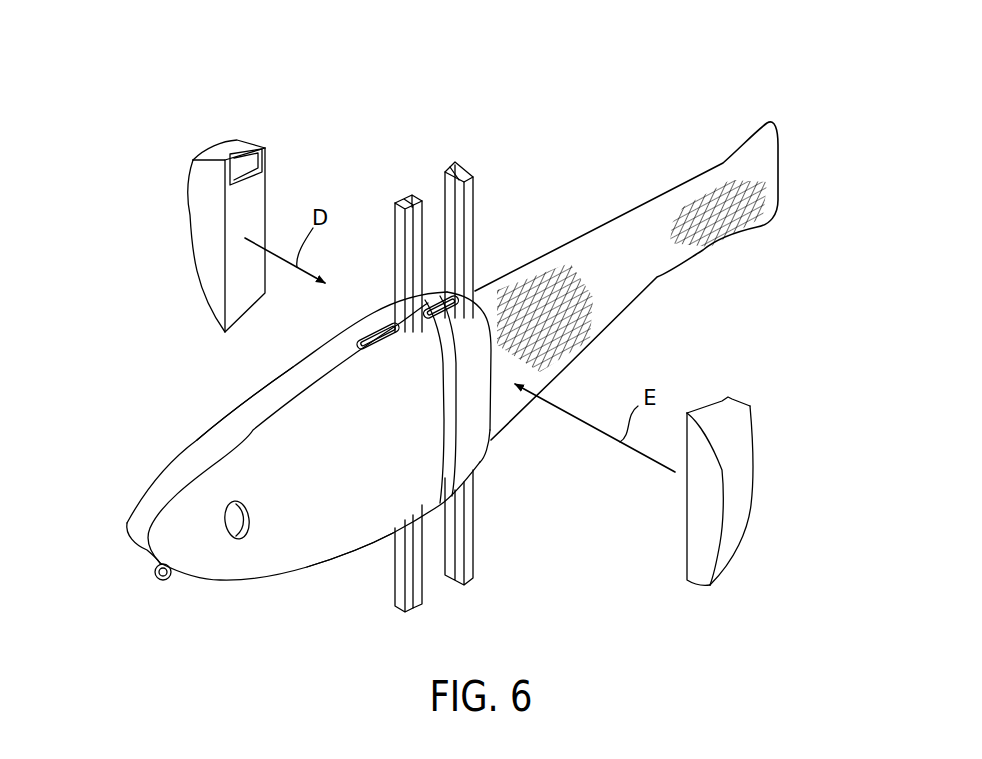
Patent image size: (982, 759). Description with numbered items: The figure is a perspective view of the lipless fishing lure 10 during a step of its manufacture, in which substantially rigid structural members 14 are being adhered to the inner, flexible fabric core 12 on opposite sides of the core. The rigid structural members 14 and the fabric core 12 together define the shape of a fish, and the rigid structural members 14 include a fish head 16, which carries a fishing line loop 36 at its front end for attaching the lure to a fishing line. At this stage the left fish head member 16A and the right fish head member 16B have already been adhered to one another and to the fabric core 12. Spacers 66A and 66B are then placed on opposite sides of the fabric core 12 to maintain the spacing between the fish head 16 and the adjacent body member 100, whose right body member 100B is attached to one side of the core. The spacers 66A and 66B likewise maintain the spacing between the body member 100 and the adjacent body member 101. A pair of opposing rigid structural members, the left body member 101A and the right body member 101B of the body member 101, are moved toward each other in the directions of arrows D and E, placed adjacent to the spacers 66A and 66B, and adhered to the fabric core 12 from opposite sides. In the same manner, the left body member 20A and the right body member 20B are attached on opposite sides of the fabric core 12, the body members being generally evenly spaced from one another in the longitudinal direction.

The fishing lure 10 is at (542, 81).
The fabric core 12 is at (632, 284).
The rigid structural members 14 is at (472, 400).
The fish head 16 is at (273, 547).
The left fish head member 16A is at (236, 425).
The right fish head member 16B is at (337, 513).
The left body member 20A is at (203, 210).
The right body member 20B is at (732, 427).
The fishing line loop 36 is at (156, 578).
The spacer 66A is at (405, 197).
The spacer 66B is at (415, 200).
The body member 100 is at (467, 338).
The right body member 100B is at (473, 433).
The body member 101 is at (735, 537).
The left body member 101A is at (253, 207).
The right body member 101B is at (730, 517).